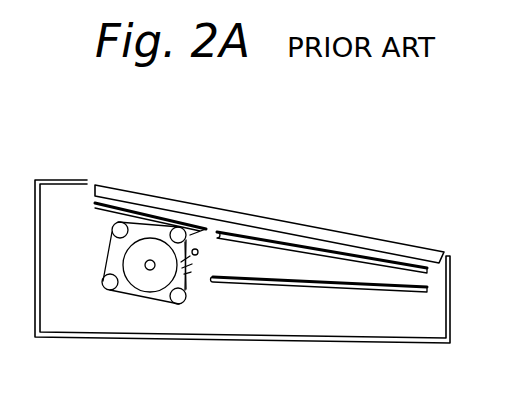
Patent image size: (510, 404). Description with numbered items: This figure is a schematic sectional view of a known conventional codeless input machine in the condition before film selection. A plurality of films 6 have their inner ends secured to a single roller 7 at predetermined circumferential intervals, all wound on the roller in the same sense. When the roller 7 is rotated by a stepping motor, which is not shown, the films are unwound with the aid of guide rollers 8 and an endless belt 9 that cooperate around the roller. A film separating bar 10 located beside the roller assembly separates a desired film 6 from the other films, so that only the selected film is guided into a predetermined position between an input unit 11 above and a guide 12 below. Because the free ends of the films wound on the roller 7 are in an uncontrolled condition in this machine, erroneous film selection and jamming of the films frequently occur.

The film 6 is at (186, 268).
The roller 7 is at (150, 265).
The guide rollers 8 is at (113, 225).
The endless belt 9 is at (108, 252).
The film separating bar 10 is at (198, 252).
The input unit 11 is at (302, 226).
The guide 12 is at (337, 252).